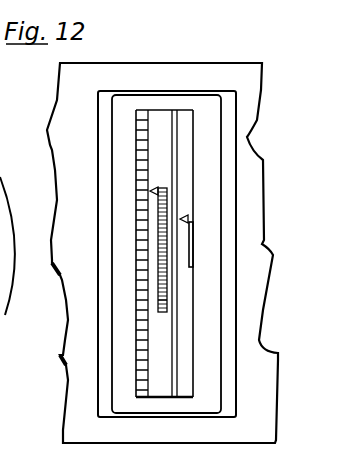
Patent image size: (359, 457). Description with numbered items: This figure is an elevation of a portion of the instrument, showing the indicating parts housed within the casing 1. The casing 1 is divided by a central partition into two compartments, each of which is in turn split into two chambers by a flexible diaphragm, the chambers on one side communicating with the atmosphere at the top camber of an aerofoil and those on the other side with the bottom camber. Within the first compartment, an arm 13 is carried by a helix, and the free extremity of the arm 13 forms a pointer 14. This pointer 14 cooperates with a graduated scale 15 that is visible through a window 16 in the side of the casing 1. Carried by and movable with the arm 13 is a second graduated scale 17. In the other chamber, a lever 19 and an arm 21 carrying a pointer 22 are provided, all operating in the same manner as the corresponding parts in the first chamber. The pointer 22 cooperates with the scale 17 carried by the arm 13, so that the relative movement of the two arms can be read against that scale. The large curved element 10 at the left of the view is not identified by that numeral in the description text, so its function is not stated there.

The casing 1 is at (85, 57).
The cylindrical body 10 is at (0, 255).
The arm 13 is at (156, 207).
The pointer 14 is at (157, 188).
The graduated scale 15 is at (136, 170).
The window 16 is at (190, 141).
The graduated scale 17 is at (160, 300).
The lever 19 is at (190, 237).
The arm 21 is at (175, 332).
The pointer 22 is at (188, 217).